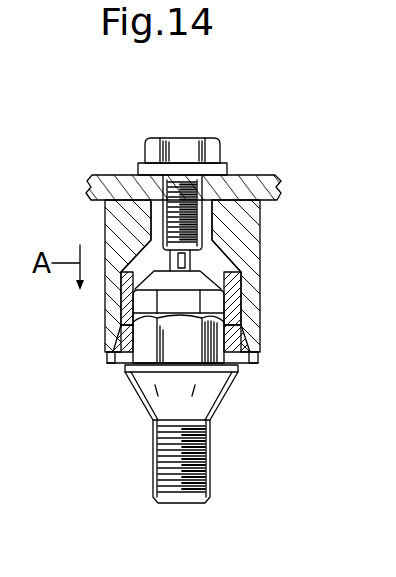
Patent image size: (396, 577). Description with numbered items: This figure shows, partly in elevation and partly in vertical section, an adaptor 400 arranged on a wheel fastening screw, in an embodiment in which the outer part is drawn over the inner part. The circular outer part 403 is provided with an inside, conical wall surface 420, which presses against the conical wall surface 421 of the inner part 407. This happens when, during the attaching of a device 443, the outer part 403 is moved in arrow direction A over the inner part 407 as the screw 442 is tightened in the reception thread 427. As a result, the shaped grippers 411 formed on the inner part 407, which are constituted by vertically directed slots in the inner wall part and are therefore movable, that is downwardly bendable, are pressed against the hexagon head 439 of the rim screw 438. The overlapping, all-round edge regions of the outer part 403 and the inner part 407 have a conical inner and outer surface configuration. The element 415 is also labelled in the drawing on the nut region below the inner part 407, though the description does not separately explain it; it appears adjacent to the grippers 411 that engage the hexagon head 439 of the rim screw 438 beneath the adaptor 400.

The adaptor 400 is at (292, 193).
The outer part 403 is at (237, 226).
The inner part 407 is at (242, 274).
The shaped grippers 411 is at (247, 348).
The nut 415 is at (225, 307).
The conical wall surface 420 is at (120, 335).
The conical wall surface 421 is at (112, 347).
The reception thread 427 is at (110, 239).
The rim screw 438 is at (152, 460).
The hexagon head 439 is at (237, 367).
The screw 442 is at (207, 135).
The device 443 is at (250, 174).